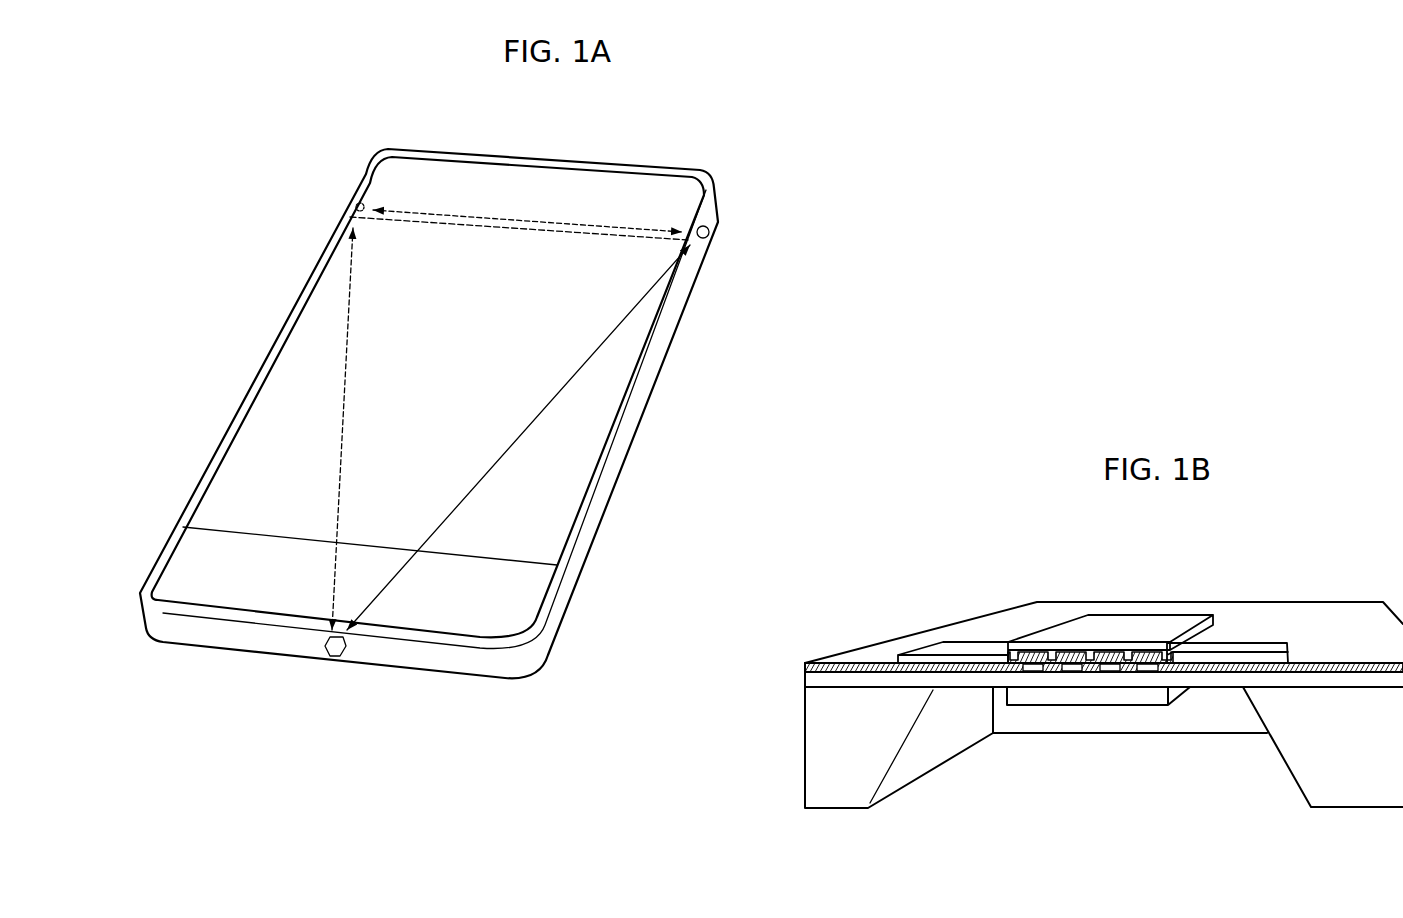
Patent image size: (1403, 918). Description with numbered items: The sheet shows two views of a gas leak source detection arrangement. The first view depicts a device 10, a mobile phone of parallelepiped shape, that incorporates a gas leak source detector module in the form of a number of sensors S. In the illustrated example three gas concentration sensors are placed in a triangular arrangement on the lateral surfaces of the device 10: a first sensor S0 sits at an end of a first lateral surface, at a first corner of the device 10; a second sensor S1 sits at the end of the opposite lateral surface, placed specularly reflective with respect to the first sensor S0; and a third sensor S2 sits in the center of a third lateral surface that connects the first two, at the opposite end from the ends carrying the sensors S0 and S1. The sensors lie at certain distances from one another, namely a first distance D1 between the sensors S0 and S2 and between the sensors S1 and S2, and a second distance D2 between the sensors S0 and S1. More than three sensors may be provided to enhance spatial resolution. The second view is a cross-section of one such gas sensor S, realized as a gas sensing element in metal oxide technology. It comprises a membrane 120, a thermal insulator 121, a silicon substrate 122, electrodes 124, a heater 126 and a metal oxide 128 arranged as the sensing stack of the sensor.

In FIG. 1A, the device 10 is at (222, 302).
In FIG. 1A, the first sensor S0 is at (364, 206).
In FIG. 1A, the second sensor S1 is at (709, 233).
In FIG. 1A, the third sensor S2 is at (331, 658).
In FIG. 1A, the first distance D1 is at (343, 407).
In FIG. 1A, the second distance D2 is at (487, 218).
In FIG. 1B, the sensor S is at (950, 578).
In FIG. 1B, the membrane 120 is at (1213, 677).
In FIG. 1B, the thermal insulator 121 is at (873, 675).
In FIG. 1B, the silicon substrate 122 is at (1080, 697).
In FIG. 1B, the electrodes 124 is at (938, 648).
In FIG. 1B, the heater 126 is at (1073, 677).
In FIG. 1B, the metal oxide 128 is at (1130, 627).